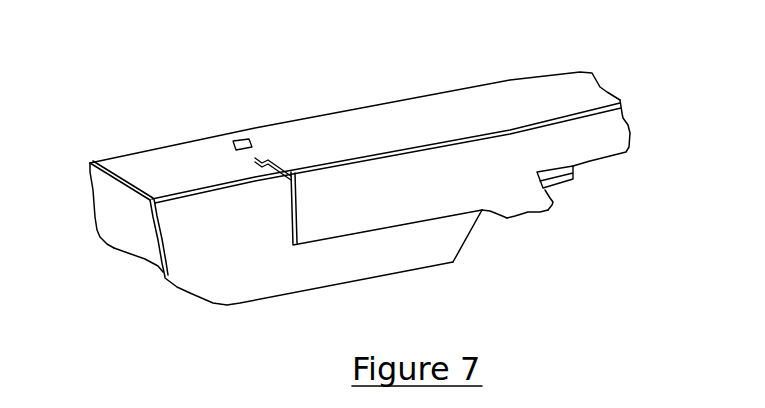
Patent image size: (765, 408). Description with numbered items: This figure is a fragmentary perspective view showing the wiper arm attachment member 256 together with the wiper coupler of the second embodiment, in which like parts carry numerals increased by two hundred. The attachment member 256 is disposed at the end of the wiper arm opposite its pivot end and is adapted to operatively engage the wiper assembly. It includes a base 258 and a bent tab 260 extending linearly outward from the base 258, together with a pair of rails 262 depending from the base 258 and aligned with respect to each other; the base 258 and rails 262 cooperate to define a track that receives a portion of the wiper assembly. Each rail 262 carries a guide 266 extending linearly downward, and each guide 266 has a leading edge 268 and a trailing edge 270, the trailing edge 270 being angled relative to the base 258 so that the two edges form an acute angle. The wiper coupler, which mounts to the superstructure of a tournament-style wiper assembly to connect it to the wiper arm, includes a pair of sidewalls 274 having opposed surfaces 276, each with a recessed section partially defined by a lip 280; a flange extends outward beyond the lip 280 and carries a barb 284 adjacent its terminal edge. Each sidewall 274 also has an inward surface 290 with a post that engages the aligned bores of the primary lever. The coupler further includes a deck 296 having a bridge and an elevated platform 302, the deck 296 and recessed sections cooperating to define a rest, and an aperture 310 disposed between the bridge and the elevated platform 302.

The wiper arm attachment member 256 is at (411, 77).
The base 258 is at (452, 92).
The bent tab 260 is at (262, 160).
The rails 262 is at (435, 202).
The guide 266 is at (528, 215).
The leading edge 268 is at (482, 211).
The trailing edge 270 is at (553, 202).
The sidewalls 274 is at (135, 155).
The opposed surfaces 276 is at (217, 284).
The lip 280 is at (377, 232).
The barb 284 is at (575, 168).
The inward surface 290 is at (123, 239).
The deck 296 is at (162, 143).
The elevated platform 302 is at (122, 170).
The aperture 310 is at (233, 140).